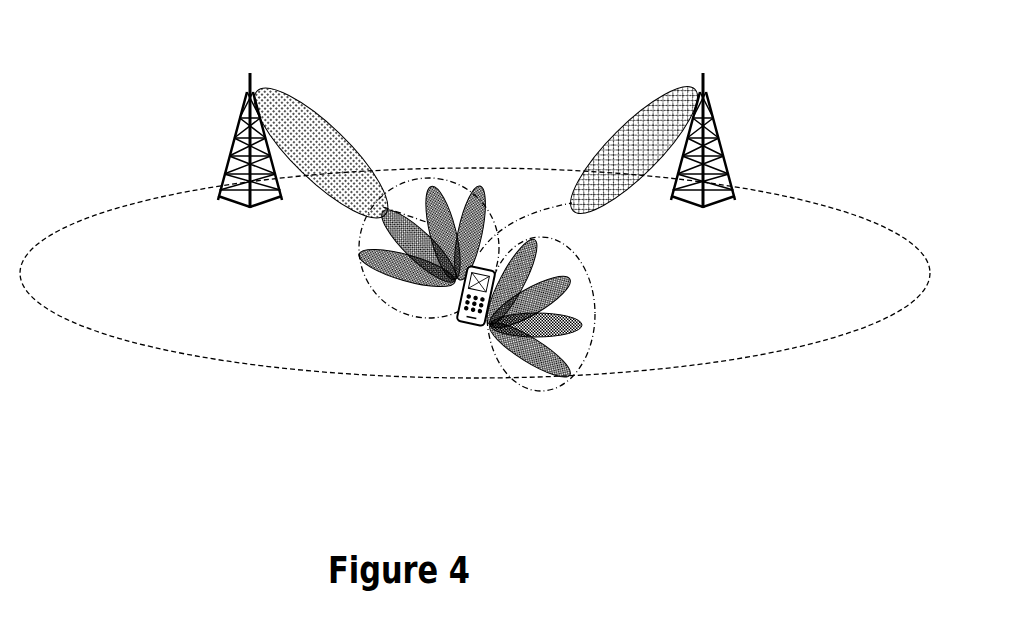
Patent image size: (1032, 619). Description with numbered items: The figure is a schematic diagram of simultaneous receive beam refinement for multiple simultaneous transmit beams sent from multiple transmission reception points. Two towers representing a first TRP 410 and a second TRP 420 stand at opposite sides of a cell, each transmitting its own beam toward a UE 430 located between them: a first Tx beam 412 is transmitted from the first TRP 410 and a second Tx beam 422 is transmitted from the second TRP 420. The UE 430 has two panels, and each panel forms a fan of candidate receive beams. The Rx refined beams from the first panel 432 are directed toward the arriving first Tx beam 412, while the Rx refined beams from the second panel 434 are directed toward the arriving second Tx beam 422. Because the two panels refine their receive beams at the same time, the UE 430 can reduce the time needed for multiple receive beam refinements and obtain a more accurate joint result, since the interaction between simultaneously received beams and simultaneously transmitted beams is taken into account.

The TRP 1 410 is at (236, 140).
The Tx beam 1 412 is at (335, 153).
The TRP 2 420 is at (714, 140).
The Tx beam 2 422 is at (596, 157).
The UE 430 is at (473, 322).
The Rx refined beams from panel 1 432 is at (365, 296).
The Rx refined beams from panel 2 434 is at (510, 372).